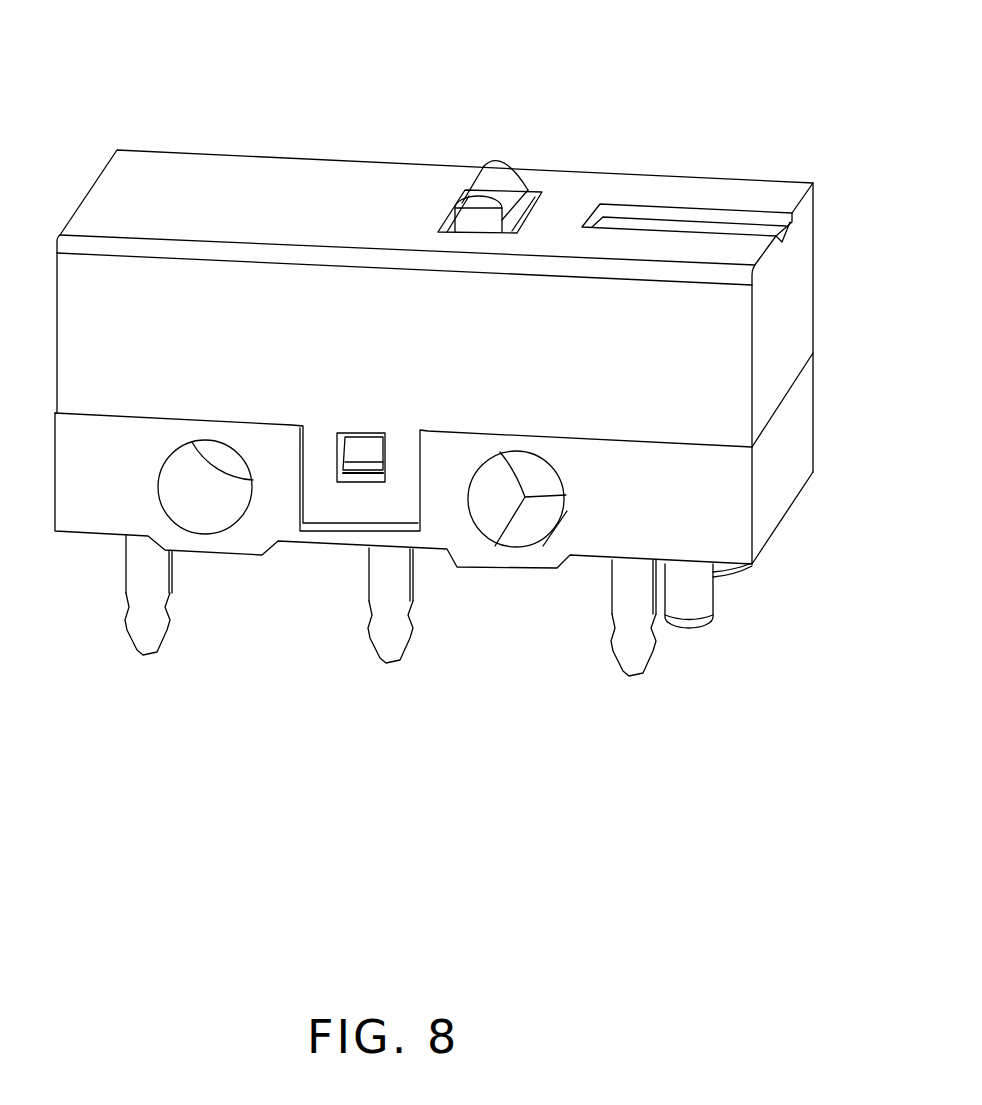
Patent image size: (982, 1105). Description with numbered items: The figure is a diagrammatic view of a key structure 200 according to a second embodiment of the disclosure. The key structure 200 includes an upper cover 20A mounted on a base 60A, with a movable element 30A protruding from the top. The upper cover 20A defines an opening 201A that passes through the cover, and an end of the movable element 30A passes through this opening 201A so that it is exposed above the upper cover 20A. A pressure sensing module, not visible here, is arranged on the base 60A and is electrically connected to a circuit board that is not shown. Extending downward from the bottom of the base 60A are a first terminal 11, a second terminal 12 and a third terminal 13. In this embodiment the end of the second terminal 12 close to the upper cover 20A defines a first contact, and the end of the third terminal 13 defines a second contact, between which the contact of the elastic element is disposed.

The key structure 200 is at (443, 40).
The upper cover 20A is at (245, 178).
The movable element 30A is at (493, 180).
The opening 201A is at (530, 188).
The base 60A is at (772, 506).
The first terminal 11 is at (635, 640).
The second terminal 12 is at (152, 630).
The third terminal 13 is at (395, 642).